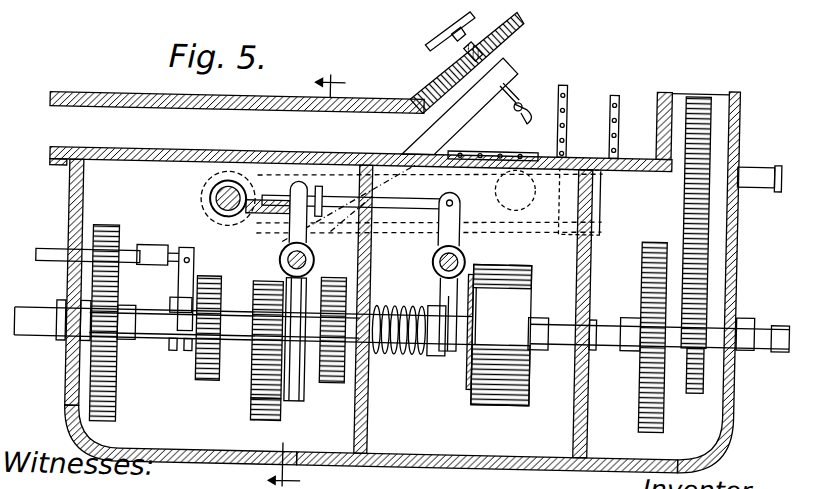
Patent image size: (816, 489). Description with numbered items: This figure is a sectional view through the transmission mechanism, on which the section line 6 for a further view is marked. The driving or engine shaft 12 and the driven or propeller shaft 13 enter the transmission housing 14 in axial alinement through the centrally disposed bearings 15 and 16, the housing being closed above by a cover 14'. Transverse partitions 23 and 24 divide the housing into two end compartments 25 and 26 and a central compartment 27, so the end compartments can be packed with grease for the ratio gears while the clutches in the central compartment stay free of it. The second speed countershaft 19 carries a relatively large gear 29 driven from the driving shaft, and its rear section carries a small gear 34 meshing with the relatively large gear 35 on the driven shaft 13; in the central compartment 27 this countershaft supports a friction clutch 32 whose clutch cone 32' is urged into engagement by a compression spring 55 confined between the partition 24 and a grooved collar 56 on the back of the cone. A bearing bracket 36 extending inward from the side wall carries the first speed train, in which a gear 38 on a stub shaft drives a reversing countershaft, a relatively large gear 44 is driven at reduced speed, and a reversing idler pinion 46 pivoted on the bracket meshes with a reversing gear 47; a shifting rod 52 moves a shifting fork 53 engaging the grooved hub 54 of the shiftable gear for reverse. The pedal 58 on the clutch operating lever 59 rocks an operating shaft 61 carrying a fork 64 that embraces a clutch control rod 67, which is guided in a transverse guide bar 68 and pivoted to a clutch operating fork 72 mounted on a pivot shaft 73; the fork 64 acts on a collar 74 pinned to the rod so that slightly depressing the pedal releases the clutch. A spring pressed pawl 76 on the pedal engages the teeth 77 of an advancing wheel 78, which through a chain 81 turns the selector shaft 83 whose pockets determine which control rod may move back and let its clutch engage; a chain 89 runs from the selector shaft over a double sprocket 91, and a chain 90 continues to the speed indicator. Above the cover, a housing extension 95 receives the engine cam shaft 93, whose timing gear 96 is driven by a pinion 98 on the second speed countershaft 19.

The section line 6- 6 is at (307, 271).
The engine shaft 12 is at (769, 344).
The propeller shaft 13 is at (29, 334).
The transmission housing 14 is at (54, 281).
The housing cover 14' is at (361, 150).
The bearing 15 is at (742, 315).
The bearing 16 is at (63, 313).
The second speed countershaft 19 is at (222, 316).
The partition 23 is at (580, 424).
The partition 24 is at (371, 438).
The end compartment 25 is at (740, 411).
The end compartment 26 is at (108, 436).
The central compartment 27 is at (453, 459).
The gear 29 is at (642, 411).
The friction clutch 32 is at (512, 335).
The clutch cone 32' is at (465, 413).
The gear 34 is at (125, 312).
The gear 35 is at (105, 232).
The bearing bracket 36 is at (294, 400).
The gear 38 is at (336, 381).
The gear 44 is at (208, 376).
The reversing idler pinion 46 is at (254, 408).
The reversing gear 47 is at (253, 363).
The shifting rod 52 is at (44, 258).
The shifting fork 53 is at (192, 276).
The grooved hub 54 is at (179, 348).
The compression spring 55 is at (407, 355).
The grooved collar 56 is at (441, 354).
The pedal 58 is at (430, 47).
The clutch operating lever 59 is at (513, 74).
The operating shaft 61 is at (279, 264).
The fork 64 is at (312, 207).
The clutch control rod 67 is at (341, 166).
The guide bar 68 is at (290, 184).
The clutch operating fork 72 is at (462, 242).
The pivot shaft 73 is at (432, 263).
The collar 74 is at (297, 172).
The spring pressed pawl 76 is at (514, 104).
The teeth 77 is at (557, 147).
The advancing wheel 78 is at (507, 151).
The chain 81 is at (243, 175).
The selector shaft 83 is at (204, 194).
The chain 89 is at (524, 230).
The chain 90 is at (608, 130).
The double sprocket 91 is at (592, 210).
The engine cam shaft 93 is at (774, 159).
The housing extension 95 is at (654, 127).
The timing gear 96 is at (683, 226).
The pinion 98 is at (699, 388).